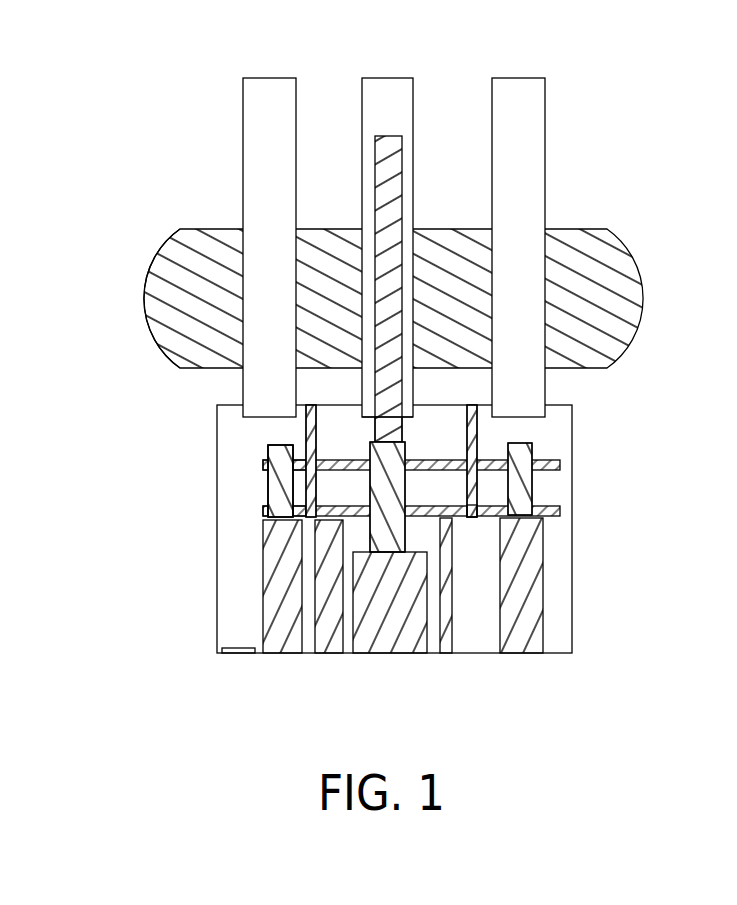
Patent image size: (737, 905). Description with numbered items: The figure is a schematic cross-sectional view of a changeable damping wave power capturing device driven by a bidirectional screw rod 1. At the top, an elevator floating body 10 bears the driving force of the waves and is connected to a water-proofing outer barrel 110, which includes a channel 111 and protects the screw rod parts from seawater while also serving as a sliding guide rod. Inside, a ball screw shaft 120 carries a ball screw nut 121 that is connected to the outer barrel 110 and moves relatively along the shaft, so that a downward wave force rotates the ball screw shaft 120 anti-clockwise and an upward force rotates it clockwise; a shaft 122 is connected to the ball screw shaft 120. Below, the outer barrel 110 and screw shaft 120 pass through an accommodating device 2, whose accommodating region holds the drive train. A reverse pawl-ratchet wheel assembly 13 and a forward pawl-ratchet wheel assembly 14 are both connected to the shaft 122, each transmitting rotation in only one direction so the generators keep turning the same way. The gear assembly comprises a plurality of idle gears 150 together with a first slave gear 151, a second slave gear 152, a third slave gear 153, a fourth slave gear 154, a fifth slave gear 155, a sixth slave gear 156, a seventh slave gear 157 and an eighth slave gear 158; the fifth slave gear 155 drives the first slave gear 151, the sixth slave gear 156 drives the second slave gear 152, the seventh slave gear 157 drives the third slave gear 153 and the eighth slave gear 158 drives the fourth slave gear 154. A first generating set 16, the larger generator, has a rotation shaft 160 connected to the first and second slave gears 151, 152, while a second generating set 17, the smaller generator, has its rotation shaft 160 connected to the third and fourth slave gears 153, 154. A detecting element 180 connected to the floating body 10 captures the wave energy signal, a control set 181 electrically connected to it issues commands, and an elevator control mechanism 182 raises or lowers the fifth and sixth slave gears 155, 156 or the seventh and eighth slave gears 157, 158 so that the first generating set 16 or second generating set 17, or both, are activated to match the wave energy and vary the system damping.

The changeable damping wave power capturing device driven by a bidirectional screw r 1 is at (89, 163).
The accommodating device 2 is at (168, 400).
The elevator floating body 10 is at (148, 326).
The reverse pawl-ratchet wheel assembly 13 is at (345, 458).
The forward pawl-ratchet wheel assembly 14 is at (362, 507).
The first generating set 16 is at (540, 605).
The second generating set 17 is at (298, 605).
The water-proofing outer barrel 110 is at (390, 78).
The channel 111 is at (408, 116).
The ball screw shaft 120 is at (380, 215).
The ball screw nut 121 is at (404, 422).
The shaft 122 is at (405, 486).
The idle gears 150 is at (327, 512).
The first slave gear 151 is at (560, 465).
The second slave gear 152 is at (562, 508).
The third slave gear 153 is at (263, 466).
The fourth slave gear 154 is at (263, 512).
The fifth slave gear 155 is at (478, 462).
The sixth slave gear 156 is at (476, 517).
The seventh slave gear 157 is at (300, 460).
The eighth slave gear 158 is at (296, 517).
The rotation shaft 160 is at (485, 486).
The detecting element 180 is at (152, 272).
The control set 181 is at (222, 651).
The elevator control mechanism 182 is at (311, 417).